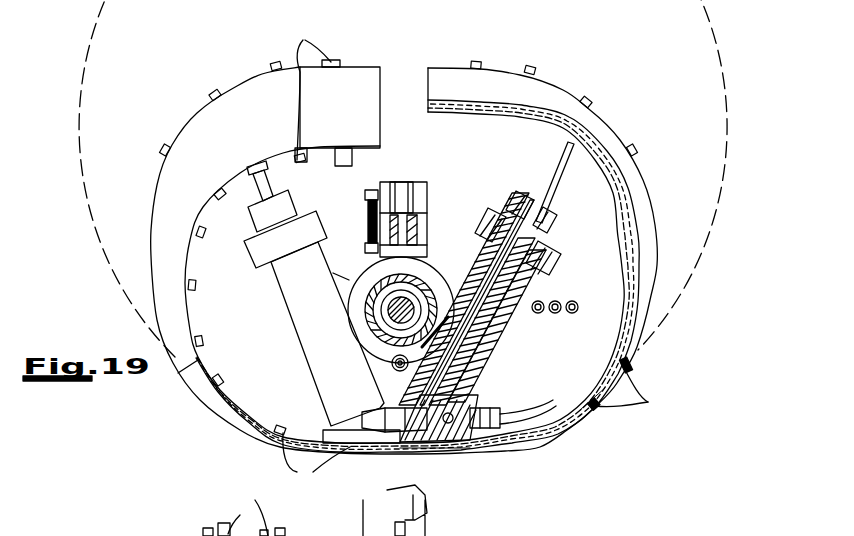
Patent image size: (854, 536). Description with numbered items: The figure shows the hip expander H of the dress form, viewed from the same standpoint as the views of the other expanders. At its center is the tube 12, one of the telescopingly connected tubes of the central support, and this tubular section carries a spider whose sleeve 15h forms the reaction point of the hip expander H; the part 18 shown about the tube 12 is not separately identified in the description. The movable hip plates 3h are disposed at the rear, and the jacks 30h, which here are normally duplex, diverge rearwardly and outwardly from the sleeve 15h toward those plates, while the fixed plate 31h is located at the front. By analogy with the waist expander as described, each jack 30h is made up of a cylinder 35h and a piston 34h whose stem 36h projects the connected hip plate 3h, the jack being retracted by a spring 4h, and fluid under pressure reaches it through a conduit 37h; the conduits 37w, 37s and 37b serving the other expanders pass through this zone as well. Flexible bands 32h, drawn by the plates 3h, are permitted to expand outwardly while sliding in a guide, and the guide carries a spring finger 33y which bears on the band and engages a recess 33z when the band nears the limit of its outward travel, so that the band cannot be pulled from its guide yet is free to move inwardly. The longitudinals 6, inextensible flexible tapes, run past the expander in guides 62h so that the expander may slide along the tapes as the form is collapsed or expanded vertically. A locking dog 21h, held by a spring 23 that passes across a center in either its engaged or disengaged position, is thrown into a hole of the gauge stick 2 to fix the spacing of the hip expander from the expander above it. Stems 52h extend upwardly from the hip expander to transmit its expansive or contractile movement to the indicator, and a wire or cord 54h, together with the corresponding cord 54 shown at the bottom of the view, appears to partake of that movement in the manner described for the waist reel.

The hip expander H is at (637, 358).
The movable hip plates 3h is at (572, 68).
The band segment joint 32h is at (177, 360).
The laminated liner 62h is at (633, 320).
The spring finger 33y is at (597, 407).
The recess 33z is at (415, 453).
The longitudinals 6 is at (446, 276).
The jacks 30h is at (290, 313).
The fixed plate 31h is at (413, 448).
The spider sleeve 15h is at (425, 270).
The bearing 18 is at (388, 322).
The tube 12 is at (393, 304).
The pivot 54h is at (393, 367).
The stems 52h is at (390, 380).
The pivot 54 is at (497, 532).
The locking dog 21h is at (403, 183).
The gauge stick 2 is at (413, 230).
The spring 23 is at (365, 222).
The threaded rod 35h is at (487, 350).
The threaded rod 34h is at (453, 388).
The extension rod 36h is at (547, 163).
The nut 4h is at (505, 228).
The hose 37h is at (537, 417).
The conduit 37w is at (543, 300).
The wire 37s is at (557, 302).
The wire 37b is at (576, 308).